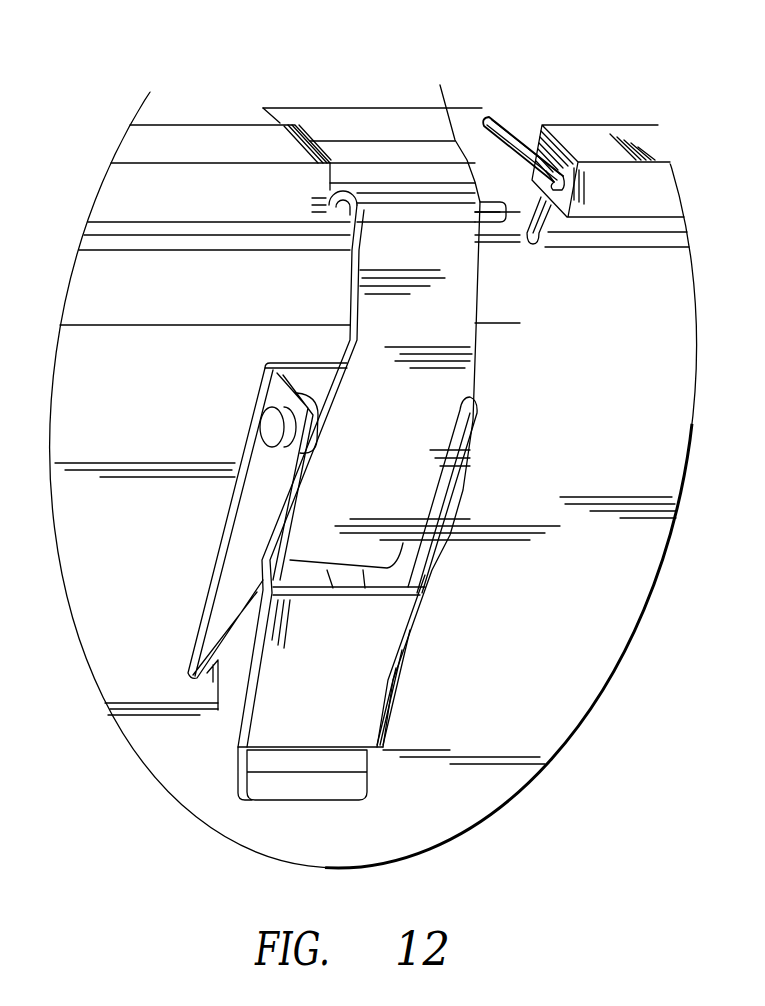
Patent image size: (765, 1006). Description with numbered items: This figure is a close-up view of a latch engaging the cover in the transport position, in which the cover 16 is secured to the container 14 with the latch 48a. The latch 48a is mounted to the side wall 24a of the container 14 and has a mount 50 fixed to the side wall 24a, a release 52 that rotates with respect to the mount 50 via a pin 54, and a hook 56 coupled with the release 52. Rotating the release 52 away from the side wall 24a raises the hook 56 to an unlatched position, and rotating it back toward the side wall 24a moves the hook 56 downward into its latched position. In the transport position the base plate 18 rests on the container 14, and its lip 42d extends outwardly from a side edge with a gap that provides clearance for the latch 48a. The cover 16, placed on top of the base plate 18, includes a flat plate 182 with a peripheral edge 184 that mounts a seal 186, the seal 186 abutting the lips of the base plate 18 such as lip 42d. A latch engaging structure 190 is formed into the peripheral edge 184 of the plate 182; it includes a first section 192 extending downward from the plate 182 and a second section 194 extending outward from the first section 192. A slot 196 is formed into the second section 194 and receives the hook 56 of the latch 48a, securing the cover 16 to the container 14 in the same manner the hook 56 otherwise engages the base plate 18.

The container 14 is at (545, 546).
The cover 16 is at (508, 118).
The base plate 18 is at (572, 244).
The side wall 24a is at (496, 630).
The lip 42d is at (663, 225).
The latch 48a is at (213, 618).
The mount 50 is at (242, 547).
The release 52 is at (353, 697).
The pin 54 is at (265, 432).
The hook 56 is at (457, 292).
The flat plate 182 is at (483, 108).
The peripheral edge 184 is at (555, 122).
The seal 186 is at (600, 138).
The latch engaging structure 190 is at (249, 86).
The first section 192 is at (372, 150).
The second section 194 is at (450, 125).
The slot 196 is at (340, 208).